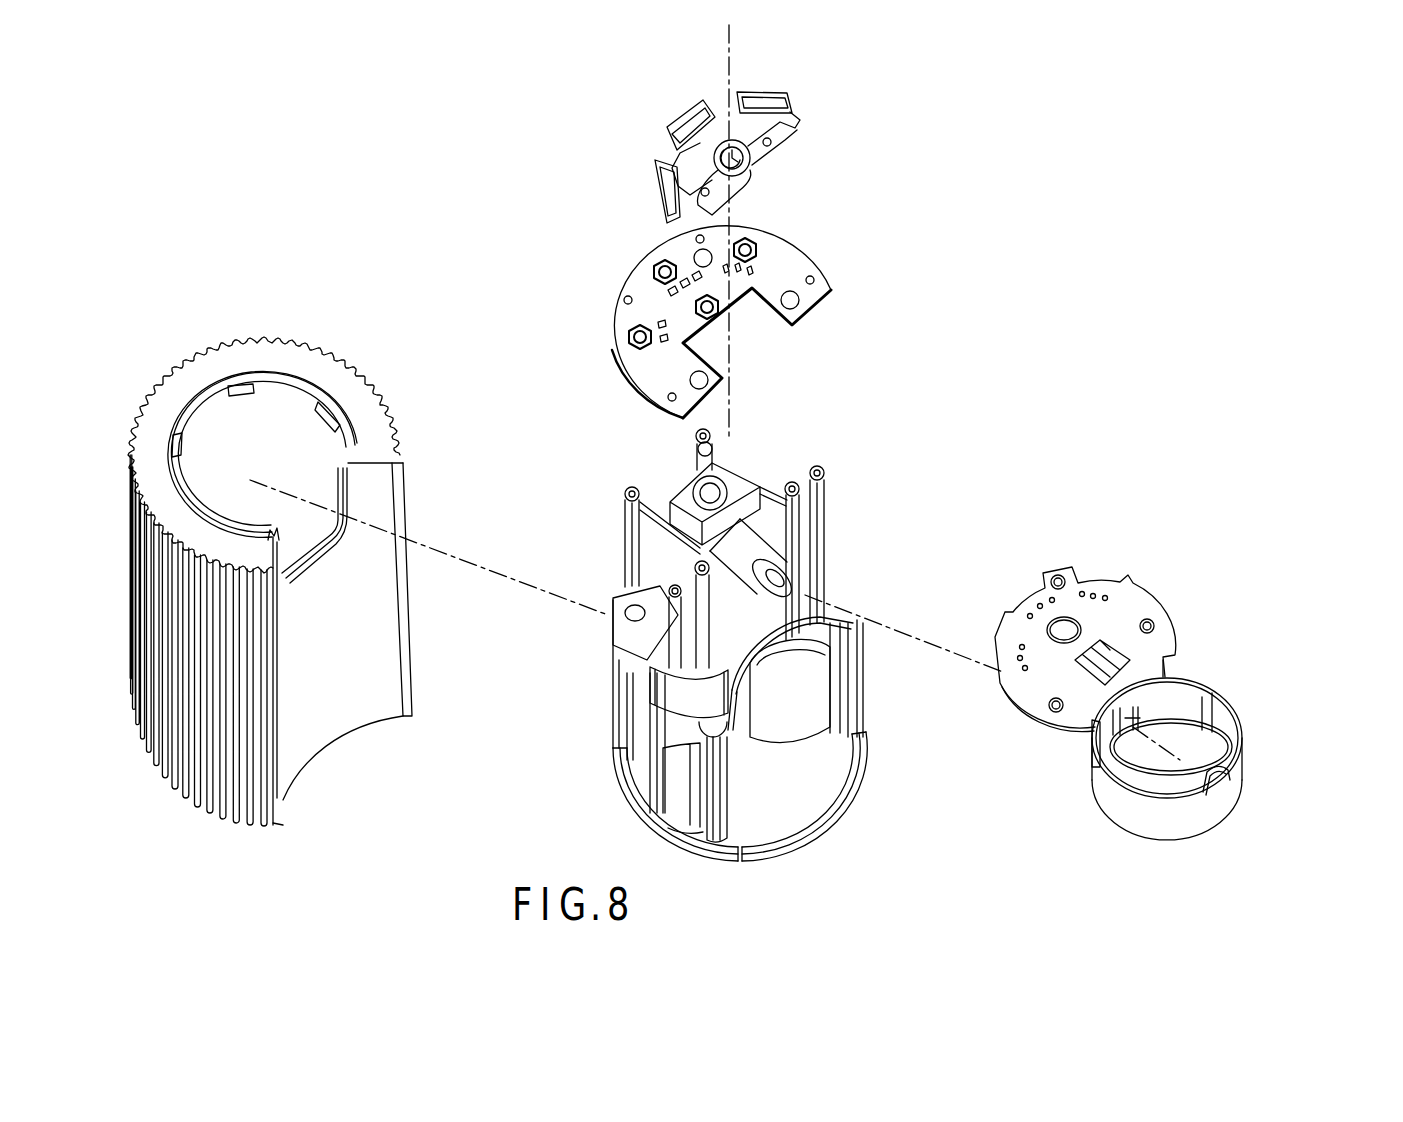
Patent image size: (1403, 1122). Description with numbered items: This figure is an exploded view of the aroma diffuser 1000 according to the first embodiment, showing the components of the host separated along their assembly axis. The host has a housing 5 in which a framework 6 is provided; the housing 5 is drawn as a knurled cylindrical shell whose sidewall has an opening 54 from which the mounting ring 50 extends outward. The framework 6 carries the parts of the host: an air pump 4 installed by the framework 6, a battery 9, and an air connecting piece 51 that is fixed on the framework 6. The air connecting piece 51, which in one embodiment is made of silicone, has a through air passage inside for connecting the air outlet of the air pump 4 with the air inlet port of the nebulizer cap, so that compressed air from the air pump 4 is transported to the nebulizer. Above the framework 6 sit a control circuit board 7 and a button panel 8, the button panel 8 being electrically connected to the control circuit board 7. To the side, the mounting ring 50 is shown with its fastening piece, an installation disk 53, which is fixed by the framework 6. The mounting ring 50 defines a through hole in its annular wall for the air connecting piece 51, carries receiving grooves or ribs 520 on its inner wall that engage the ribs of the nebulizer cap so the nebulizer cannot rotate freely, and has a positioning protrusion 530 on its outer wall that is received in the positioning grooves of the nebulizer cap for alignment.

The motor assembly 1000 is at (355, 180).
The housing 5 is at (258, 365).
The opening 54 is at (333, 492).
The button panel 8 is at (797, 135).
The control circuit board 7 is at (795, 258).
The air connecting piece 51 is at (780, 577).
The installation disk 53 is at (1120, 598).
The mounting ring 50 is at (1220, 673).
The ribs 520 is at (1215, 721).
The positioning protrusion 530 is at (1217, 780).
The framework 6 is at (643, 765).
The air pump 4 is at (803, 703).
The battery 9 is at (742, 742).